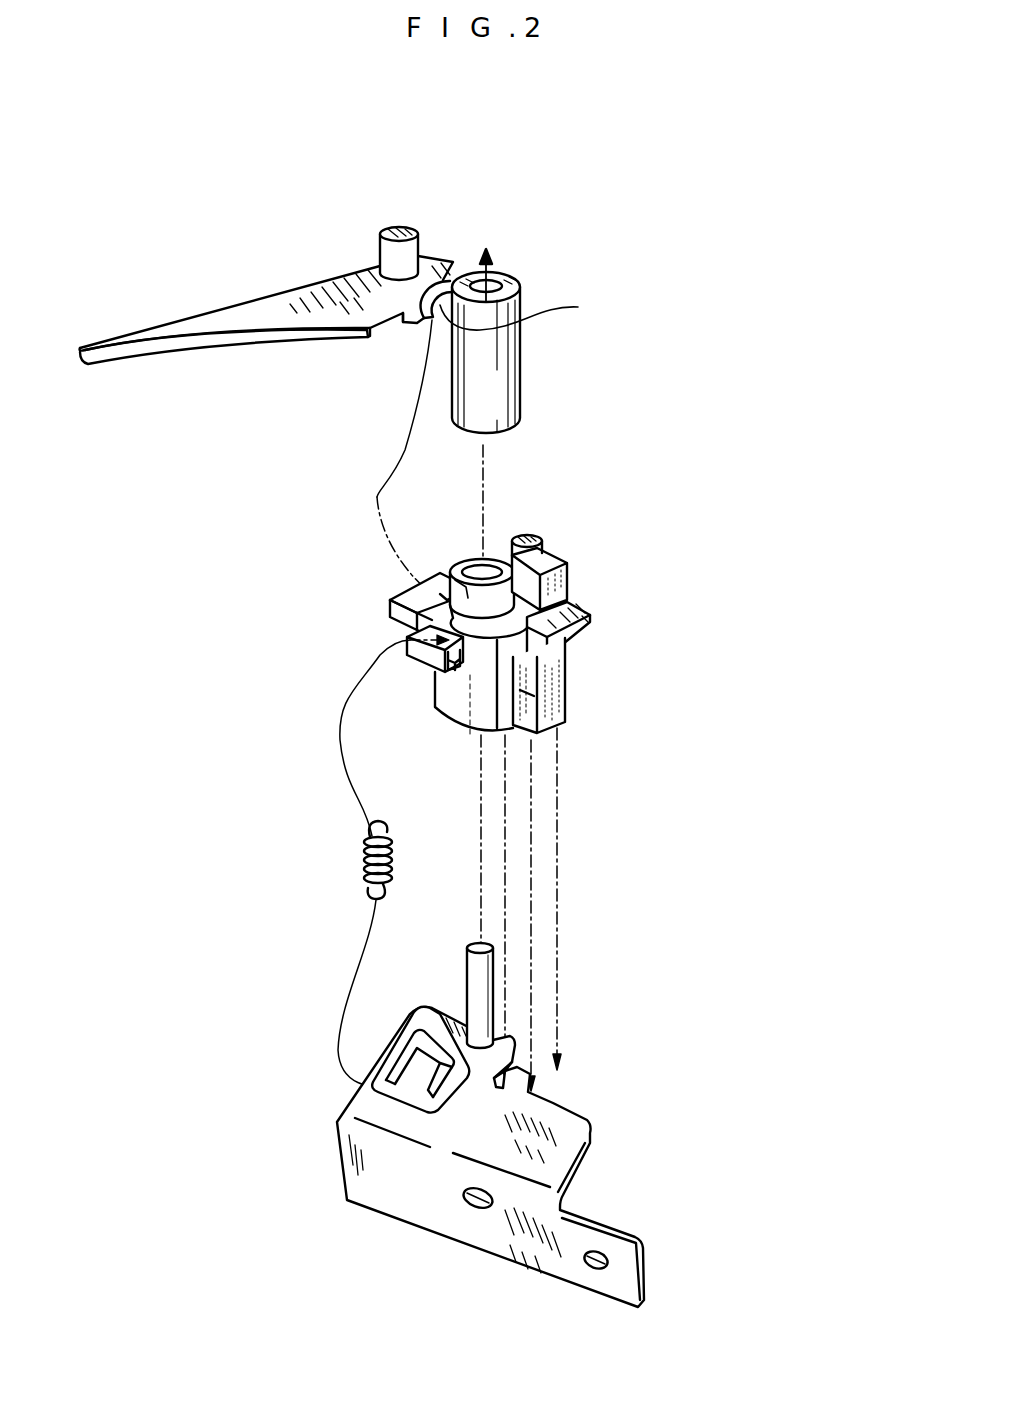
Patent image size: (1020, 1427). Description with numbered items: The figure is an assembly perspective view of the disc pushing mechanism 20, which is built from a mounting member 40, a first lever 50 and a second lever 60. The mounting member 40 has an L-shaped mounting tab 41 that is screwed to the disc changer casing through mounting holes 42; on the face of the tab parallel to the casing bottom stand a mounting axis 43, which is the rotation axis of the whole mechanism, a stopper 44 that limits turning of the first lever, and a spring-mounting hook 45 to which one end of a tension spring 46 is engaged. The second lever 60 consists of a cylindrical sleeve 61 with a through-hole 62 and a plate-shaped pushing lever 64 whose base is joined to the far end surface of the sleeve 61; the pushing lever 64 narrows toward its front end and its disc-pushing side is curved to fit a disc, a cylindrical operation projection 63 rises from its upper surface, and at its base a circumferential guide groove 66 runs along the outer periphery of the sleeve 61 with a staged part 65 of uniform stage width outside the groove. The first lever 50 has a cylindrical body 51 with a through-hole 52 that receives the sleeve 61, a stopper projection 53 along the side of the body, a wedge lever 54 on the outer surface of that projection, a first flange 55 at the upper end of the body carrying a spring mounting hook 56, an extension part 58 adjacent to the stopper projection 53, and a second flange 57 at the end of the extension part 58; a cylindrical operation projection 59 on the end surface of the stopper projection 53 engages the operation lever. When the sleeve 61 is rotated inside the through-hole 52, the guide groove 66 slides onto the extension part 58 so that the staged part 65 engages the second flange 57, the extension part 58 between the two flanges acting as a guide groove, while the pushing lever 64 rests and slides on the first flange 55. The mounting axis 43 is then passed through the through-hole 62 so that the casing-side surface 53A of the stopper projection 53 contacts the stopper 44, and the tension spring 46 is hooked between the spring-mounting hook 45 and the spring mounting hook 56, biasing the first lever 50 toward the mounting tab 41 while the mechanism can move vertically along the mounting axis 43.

The disc pushing mechanism 20 is at (766, 254).
The mounting member 40 is at (763, 1088).
The mounting tab 41 is at (560, 1127).
The mounting holes 42 is at (587, 1262).
The mounting axis 43 is at (475, 983).
The stopper 44 is at (517, 1085).
The spring-mounting hook 45 is at (412, 1088).
The tension spring 46 is at (362, 878).
The first lever 50 is at (748, 598).
The cylindrical body 51 is at (482, 720).
The through-hole 52 is at (492, 570).
The stopper projection 53 is at (550, 690).
The surface of the stopper projection 53A is at (522, 702).
The wedge lever 54 is at (595, 632).
The first flange 55 is at (393, 601).
The spring mounting hook 56 is at (432, 660).
The second flange 57 is at (446, 598).
The extension part 58 is at (458, 672).
The operation projection 59 is at (543, 538).
The second lever 60 is at (606, 346).
The sleeve 61 is at (507, 393).
The through-hole 62 is at (498, 273).
The operation projection 63 is at (410, 222).
The pushing lever 64 is at (263, 307).
The staged part 65 is at (443, 278).
The guide groove 66 is at (525, 309).